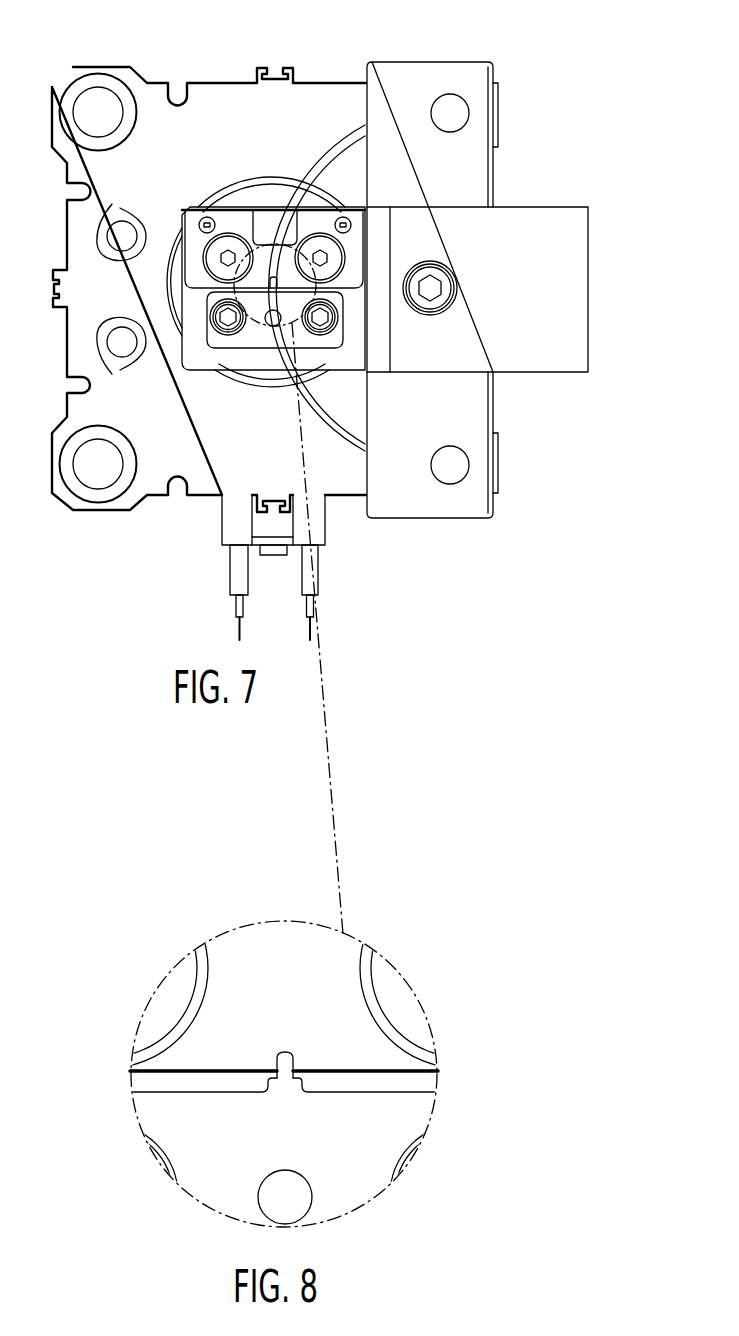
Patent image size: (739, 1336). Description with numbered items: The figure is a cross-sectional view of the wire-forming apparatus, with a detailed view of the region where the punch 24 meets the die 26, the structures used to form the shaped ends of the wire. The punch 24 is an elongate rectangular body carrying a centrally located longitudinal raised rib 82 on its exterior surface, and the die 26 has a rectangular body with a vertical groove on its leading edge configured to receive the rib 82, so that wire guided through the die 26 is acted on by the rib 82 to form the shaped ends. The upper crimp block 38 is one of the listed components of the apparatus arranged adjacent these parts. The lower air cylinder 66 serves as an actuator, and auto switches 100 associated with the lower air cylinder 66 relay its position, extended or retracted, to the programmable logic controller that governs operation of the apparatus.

In FIG. 7, the punch 24 is at (248, 338).
In FIG. 8, the punch 24 is at (284, 1173).
In FIG. 7, the die 26 is at (243, 228).
In FIG. 8, the die 26 is at (284, 968).
In FIG. 7, the upper crimp block 38 is at (483, 185).
In FIG. 7, the lower air cylinder 66 is at (335, 82).
In FIG. 8, the raised rib 82 is at (284, 1065).
In FIG. 7, the auto switches 100 is at (333, 582).